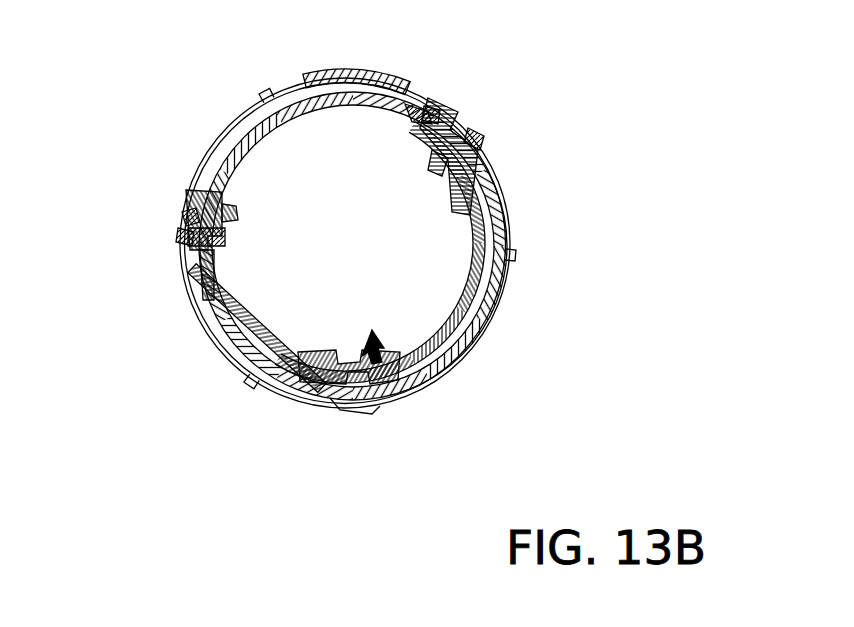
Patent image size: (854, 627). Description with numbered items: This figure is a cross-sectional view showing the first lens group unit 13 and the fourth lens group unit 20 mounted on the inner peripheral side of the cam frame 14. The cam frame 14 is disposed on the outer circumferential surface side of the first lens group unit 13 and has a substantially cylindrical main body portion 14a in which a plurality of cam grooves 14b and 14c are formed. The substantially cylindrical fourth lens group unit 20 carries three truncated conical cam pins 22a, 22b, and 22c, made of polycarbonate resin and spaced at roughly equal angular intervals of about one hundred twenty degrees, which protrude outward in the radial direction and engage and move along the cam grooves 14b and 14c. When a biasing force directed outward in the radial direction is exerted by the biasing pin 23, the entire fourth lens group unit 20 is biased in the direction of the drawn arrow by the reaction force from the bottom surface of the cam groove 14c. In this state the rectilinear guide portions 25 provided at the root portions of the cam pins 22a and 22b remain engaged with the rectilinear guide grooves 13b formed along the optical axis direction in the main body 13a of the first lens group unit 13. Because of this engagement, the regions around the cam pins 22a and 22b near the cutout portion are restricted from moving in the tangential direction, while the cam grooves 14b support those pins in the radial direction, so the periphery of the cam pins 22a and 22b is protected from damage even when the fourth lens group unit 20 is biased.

The first lens group unit 13 is at (300, 124).
The main body 13a is at (362, 92).
The rectilinear guide grooves 13b is at (283, 212).
The cam frame 14 is at (242, 98).
The main body portion 14a is at (230, 118).
The cam grooves 14b is at (420, 124).
The cam groove 14c is at (400, 407).
The fourth lens group unit 20 is at (270, 330).
The cam pin 22a is at (186, 194).
The cam pin 22b is at (464, 118).
The cam pin 22c is at (460, 364).
The biasing pin 23 is at (420, 380).
The rectilinear guide portions 25 is at (432, 108).